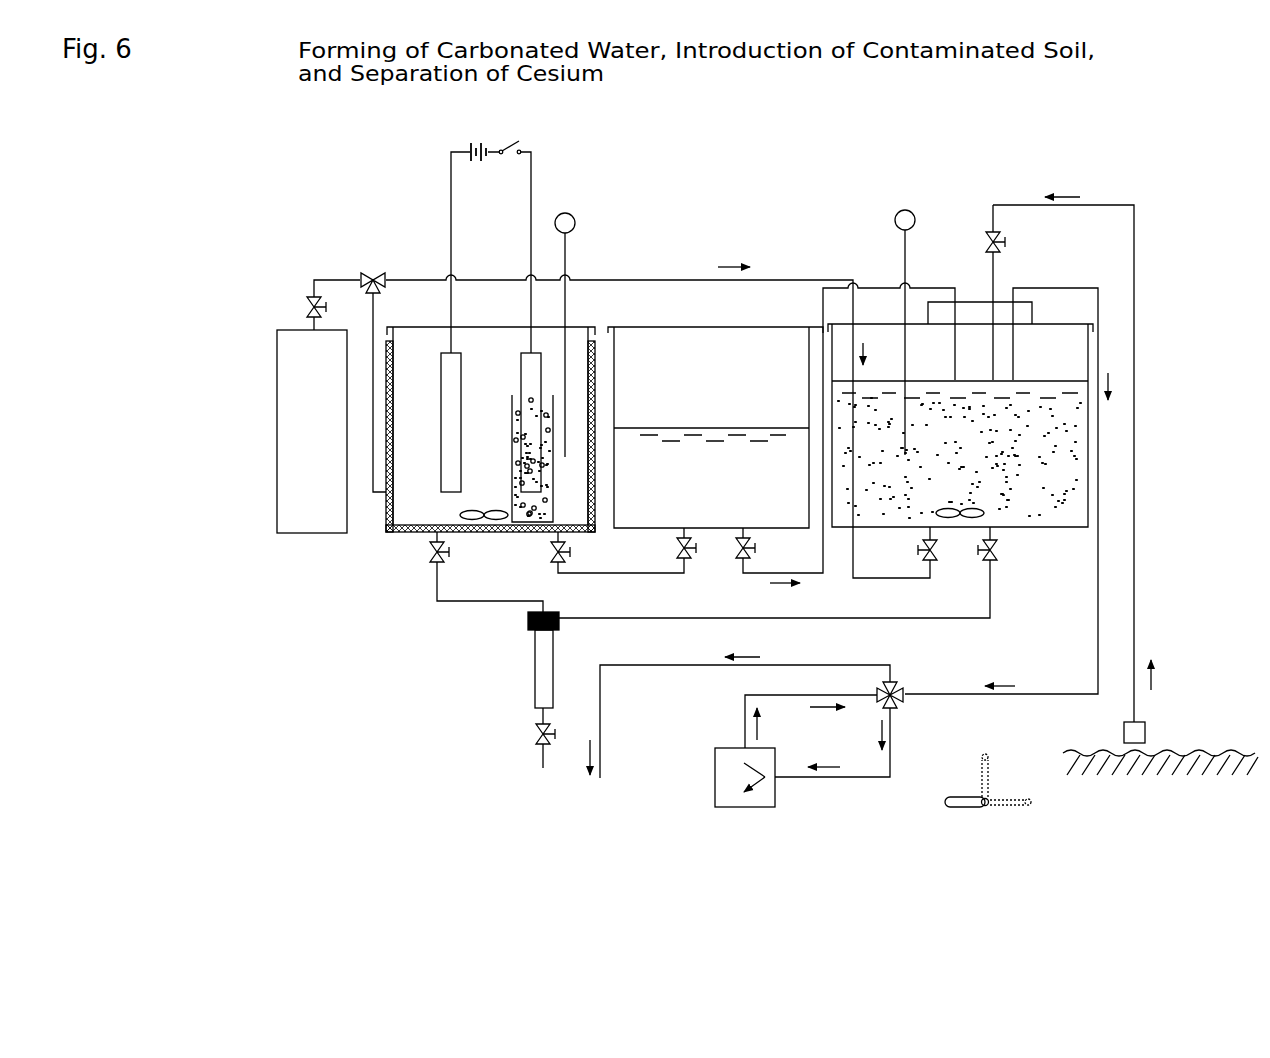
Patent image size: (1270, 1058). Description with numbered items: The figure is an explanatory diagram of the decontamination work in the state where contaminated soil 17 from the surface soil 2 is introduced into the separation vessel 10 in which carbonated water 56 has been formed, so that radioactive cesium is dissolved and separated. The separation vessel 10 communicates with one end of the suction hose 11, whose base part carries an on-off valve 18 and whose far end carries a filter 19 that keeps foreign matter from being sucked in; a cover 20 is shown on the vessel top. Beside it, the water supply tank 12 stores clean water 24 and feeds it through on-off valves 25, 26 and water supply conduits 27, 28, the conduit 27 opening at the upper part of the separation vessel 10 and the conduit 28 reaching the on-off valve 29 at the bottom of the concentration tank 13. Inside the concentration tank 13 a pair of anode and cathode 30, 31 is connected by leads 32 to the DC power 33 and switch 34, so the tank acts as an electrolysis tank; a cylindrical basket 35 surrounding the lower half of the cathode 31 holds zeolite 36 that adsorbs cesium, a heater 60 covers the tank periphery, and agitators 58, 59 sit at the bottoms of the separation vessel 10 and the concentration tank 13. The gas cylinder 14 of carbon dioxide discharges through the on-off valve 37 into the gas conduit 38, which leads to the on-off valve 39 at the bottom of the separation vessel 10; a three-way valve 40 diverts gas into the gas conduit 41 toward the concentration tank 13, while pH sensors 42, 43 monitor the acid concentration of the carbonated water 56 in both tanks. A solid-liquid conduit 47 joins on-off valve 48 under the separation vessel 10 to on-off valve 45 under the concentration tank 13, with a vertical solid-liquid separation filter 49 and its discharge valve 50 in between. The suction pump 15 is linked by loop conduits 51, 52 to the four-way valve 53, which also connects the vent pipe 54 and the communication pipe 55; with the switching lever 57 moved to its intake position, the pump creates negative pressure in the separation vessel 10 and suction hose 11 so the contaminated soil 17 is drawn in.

The surface soil 2 is at (1235, 752).
The separation vessel 10 is at (1060, 365).
The suction hose 11 is at (1134, 247).
The water supply tank 12 is at (648, 327).
The concentration tank 13 is at (480, 327).
The gas cylinder 14 is at (290, 420).
The suction pump 15 is at (715, 782).
The contaminated soil 17 is at (1058, 492).
The on-off valve 18 is at (986, 242).
The filter 19 is at (1147, 730).
The cover 20 is at (1030, 313).
The clean water 24 is at (755, 432).
The on-off valve 25 is at (735, 556).
The on-off valve 26 is at (675, 550).
The water supply conduit 27 is at (775, 573).
The water supply conduit 28 is at (620, 578).
The on-off valve 29 is at (551, 556).
The anode 30 is at (441, 378).
The cathode 31 is at (521, 378).
The leads 32 is at (451, 203).
The DC power 33 is at (470, 148).
The switch 34 is at (508, 135).
The cylindrical basket 35 is at (512, 428).
The zeolite 36 is at (517, 475).
The on-off valve 37 is at (306, 307).
The gas conduit 38 is at (651, 279).
The on-off valve 39 is at (918, 550).
The three-way valve 40 is at (373, 272).
The gas conduit 41 is at (373, 362).
The pH sensor 42 is at (893, 220).
The pH sensor 43 is at (577, 222).
The on-off valve 45 is at (431, 556).
The solid-liquid conduit 47 is at (463, 605).
The on-off valve 48 is at (1002, 550).
The solid-liquid separation filter 49 is at (535, 683).
The discharge valve 50 is at (533, 734).
The loop conduit 51 is at (805, 780).
The loop conduit 52 is at (777, 700).
The four-way valve 53 is at (900, 688).
The vent pipe 54 is at (655, 668).
The communication pipe 55 is at (1055, 288).
The carbonated water 56 is at (1062, 400).
The switching lever 57 is at (962, 798).
The agitator 58 is at (950, 522).
The agitator 59 is at (462, 515).
The heater 60 is at (386, 523).